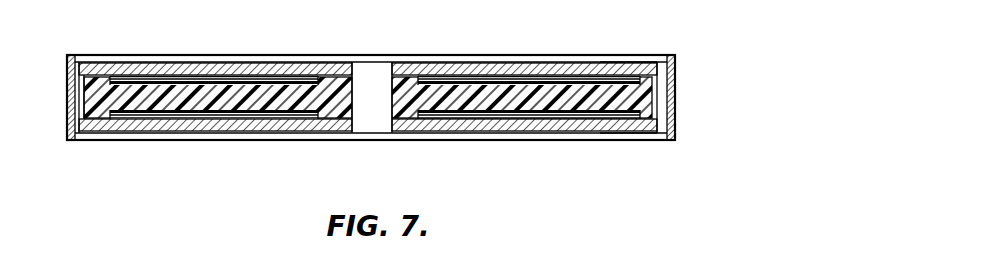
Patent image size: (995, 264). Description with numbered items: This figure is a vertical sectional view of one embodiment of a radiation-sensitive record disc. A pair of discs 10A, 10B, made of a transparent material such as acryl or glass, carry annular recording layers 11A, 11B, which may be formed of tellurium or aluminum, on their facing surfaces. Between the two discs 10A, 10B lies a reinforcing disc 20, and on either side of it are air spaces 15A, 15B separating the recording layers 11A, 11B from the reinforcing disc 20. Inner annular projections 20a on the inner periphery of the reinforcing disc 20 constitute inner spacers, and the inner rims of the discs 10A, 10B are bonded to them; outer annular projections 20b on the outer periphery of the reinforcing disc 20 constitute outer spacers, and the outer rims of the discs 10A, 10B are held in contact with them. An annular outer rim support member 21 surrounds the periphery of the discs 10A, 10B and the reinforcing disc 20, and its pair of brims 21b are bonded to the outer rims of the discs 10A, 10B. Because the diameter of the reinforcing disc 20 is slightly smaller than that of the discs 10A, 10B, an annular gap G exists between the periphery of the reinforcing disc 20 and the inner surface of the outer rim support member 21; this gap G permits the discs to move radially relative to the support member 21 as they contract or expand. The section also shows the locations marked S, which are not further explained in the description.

The disc 10A is at (518, 72).
The disc 10B is at (522, 124).
The recording layer 11A is at (468, 80).
The recording layer 11B is at (572, 116).
The air space 15A is at (560, 84).
The air space 15B is at (470, 112).
The reinforcing disc 20 is at (200, 102).
The inner annular projections 20a is at (414, 82).
The outer annular projections 20b is at (641, 62).
The outer rim support member 21 is at (677, 99).
The brims 21b is at (662, 56).
The seal S is at (79, 55).
The annular gap G is at (77, 90).